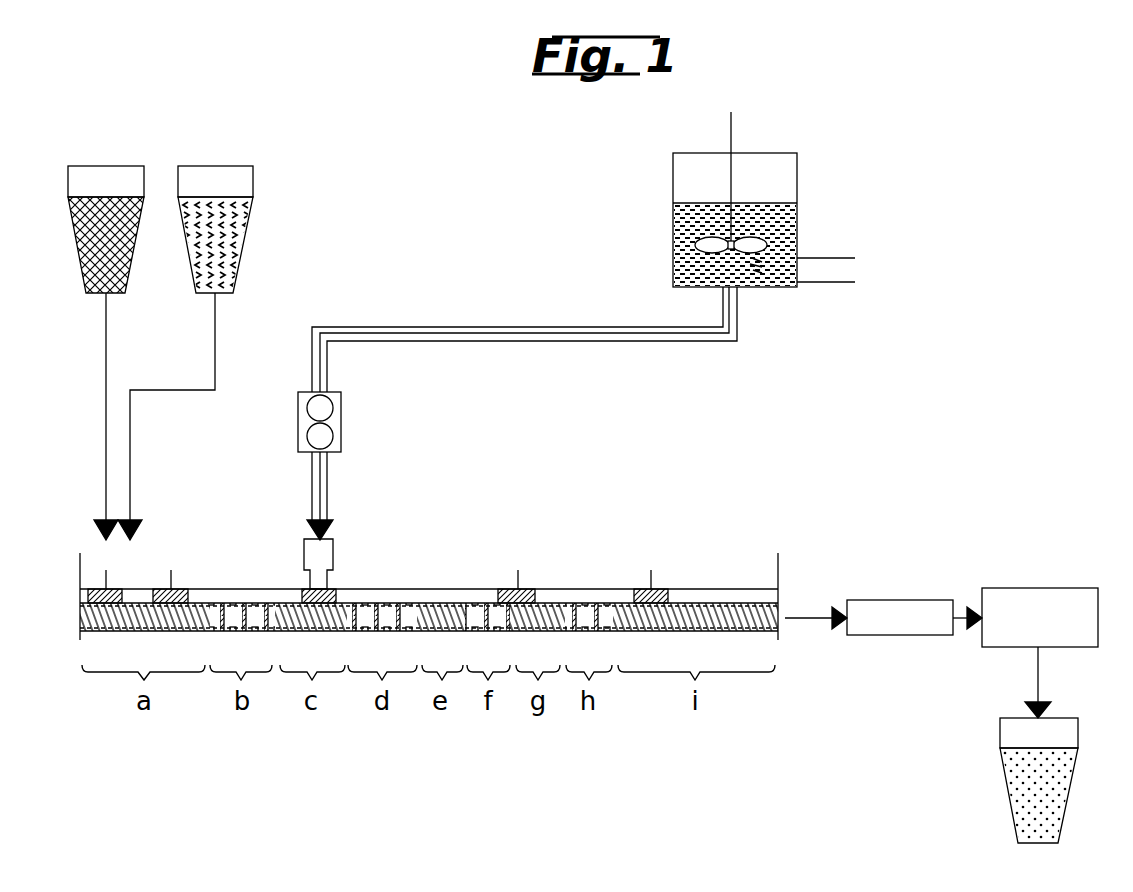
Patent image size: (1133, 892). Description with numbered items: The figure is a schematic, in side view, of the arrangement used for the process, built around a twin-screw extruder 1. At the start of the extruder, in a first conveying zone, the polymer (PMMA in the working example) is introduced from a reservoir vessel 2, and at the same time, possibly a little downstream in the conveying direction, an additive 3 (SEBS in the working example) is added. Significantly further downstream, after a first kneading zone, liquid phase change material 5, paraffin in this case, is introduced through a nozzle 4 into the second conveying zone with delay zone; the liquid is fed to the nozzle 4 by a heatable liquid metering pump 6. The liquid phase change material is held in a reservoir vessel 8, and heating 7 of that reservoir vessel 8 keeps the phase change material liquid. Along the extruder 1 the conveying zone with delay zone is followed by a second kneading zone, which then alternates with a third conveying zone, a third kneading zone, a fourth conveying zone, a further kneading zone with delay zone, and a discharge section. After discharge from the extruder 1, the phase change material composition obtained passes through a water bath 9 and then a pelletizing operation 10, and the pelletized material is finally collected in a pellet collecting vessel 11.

The twin-screw extruder 1 is at (435, 588).
The reservoir vessel 2 is at (81, 243).
The additive 3 is at (238, 243).
The nozzle 4 is at (324, 557).
The liquid phase change material 5 is at (784, 217).
The heatable liquid metering pump 6 is at (336, 417).
The heating 7 is at (835, 286).
The reservoir vessel for the liquid PCM 8 is at (775, 160).
The water bath 9 is at (890, 608).
The pelletizing operation 10 is at (1040, 600).
The pellet collecting vessel 11 is at (1014, 782).